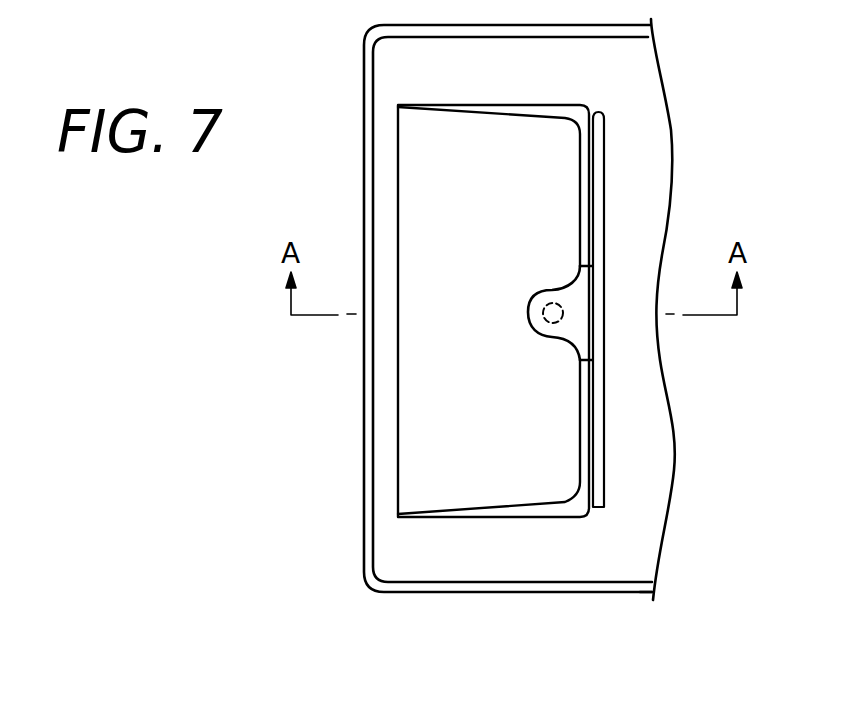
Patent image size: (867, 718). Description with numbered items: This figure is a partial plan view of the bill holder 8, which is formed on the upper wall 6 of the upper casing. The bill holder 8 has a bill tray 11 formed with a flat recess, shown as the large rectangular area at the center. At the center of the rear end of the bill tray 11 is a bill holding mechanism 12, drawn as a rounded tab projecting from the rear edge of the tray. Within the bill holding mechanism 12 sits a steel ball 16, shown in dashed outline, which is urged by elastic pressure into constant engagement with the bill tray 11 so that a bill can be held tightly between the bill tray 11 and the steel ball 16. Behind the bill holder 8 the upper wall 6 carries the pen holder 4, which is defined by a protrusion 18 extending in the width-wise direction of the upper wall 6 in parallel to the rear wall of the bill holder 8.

The pen holder 4 is at (658, 215).
The upper wall 6 is at (620, 568).
The bill holder 8 is at (431, 442).
The bill tray 11 is at (428, 368).
The bill holding mechanism 12 is at (534, 292).
The steel ball 16 is at (553, 302).
The protrusion 18 is at (605, 151).